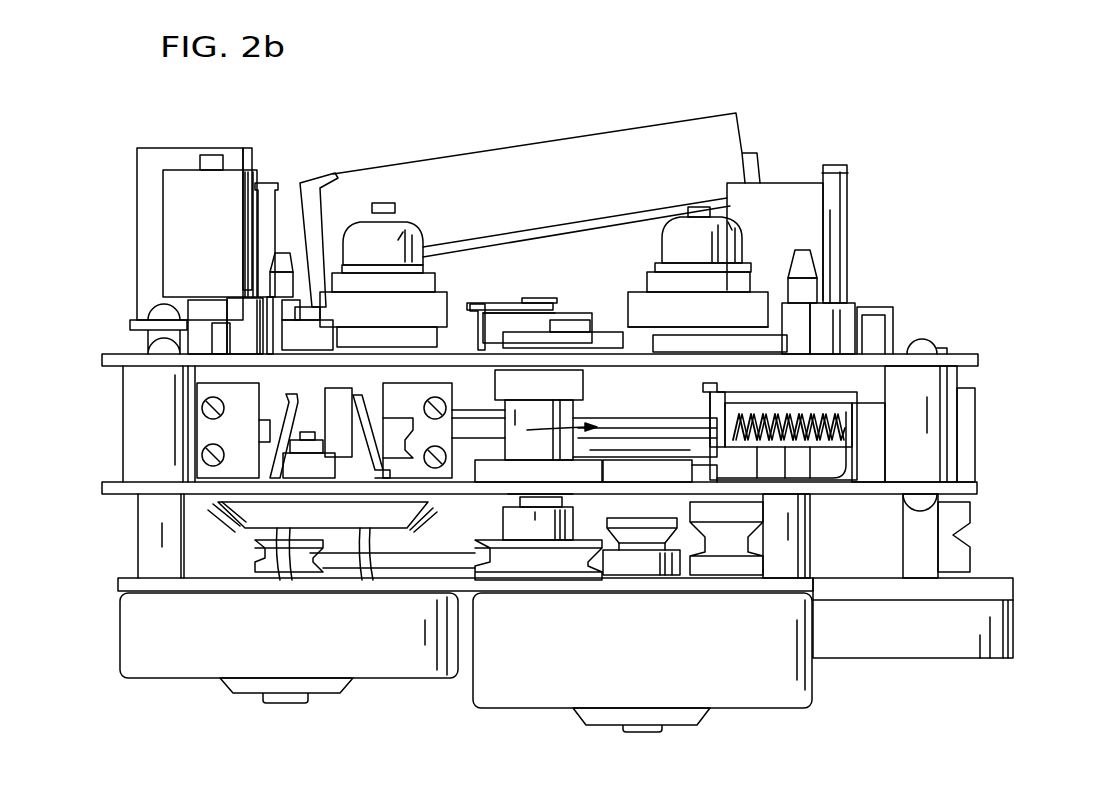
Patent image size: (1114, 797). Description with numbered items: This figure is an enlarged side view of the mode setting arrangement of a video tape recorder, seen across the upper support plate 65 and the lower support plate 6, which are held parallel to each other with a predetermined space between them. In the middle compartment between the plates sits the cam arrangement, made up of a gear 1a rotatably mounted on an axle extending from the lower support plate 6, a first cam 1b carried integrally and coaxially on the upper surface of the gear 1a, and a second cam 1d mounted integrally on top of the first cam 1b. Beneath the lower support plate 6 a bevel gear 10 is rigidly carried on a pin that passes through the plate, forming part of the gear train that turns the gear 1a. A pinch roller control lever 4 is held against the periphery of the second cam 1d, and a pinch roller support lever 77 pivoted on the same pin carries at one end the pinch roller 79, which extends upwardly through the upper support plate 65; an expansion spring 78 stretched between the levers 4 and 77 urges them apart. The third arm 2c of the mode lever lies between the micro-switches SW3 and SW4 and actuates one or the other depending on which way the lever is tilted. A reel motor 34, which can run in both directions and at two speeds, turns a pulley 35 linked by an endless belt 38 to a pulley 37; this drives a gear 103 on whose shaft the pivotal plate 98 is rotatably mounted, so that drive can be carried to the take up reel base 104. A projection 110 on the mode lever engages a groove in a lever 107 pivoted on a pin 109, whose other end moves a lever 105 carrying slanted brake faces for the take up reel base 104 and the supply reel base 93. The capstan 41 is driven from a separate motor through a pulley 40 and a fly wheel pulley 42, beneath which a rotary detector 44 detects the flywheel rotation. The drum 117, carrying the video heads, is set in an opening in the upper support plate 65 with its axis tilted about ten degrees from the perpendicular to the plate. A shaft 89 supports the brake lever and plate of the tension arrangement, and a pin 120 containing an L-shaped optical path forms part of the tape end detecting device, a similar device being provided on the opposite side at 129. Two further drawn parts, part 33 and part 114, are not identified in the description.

The gear 1a is at (678, 443).
The first cam 1b is at (645, 425).
The second cam 1d is at (617, 412).
The third arm 2c is at (338, 403).
The pinch roller control lever 4 is at (812, 407).
The lower support plate 6 is at (975, 492).
The bevel gear 10 is at (222, 518).
The motor 33 is at (540, 692).
The reel motor 34 is at (202, 658).
The pulley 35 is at (287, 567).
The pulley 37 is at (542, 562).
The endless belt 38 is at (395, 561).
The pulley 40 is at (630, 560).
The capstan 41 is at (833, 187).
The fly wheel pulley 42 is at (960, 525).
The rotary detector 44 is at (1003, 628).
The upper support plate 65 is at (970, 363).
The pinch roller support lever 77 is at (763, 398).
The expansion spring 78 is at (837, 428).
The pinch roller 79 is at (775, 205).
The shaft 89 is at (242, 313).
The supply reel base 93 is at (443, 317).
The pivotal plate 98 is at (498, 385).
The gear 103 is at (552, 343).
The take up reel base 104 is at (645, 310).
The lever 105 is at (512, 300).
The lever 107 is at (415, 350).
The pin 109 is at (318, 335).
The projection 110 is at (455, 345).
The housing 114 is at (227, 187).
The drum 117 is at (433, 187).
The pin 120 is at (280, 257).
The tape end detecting device 129 is at (808, 287).
The micro-switch SW3 is at (240, 427).
The micro-switch SW4 is at (403, 460).